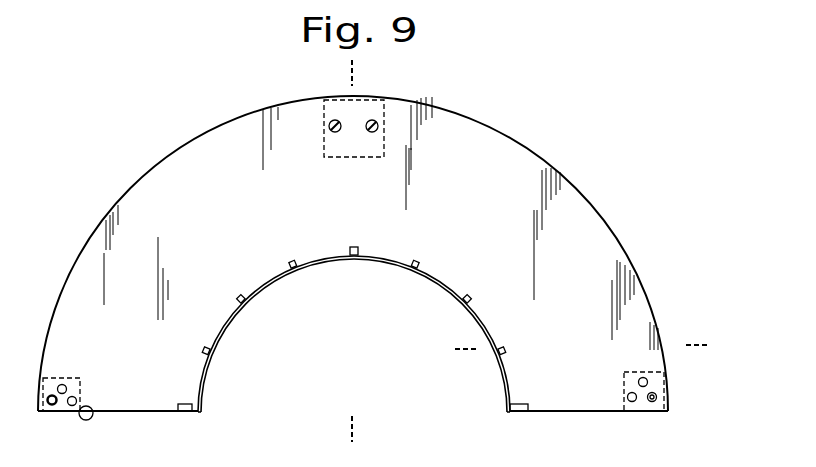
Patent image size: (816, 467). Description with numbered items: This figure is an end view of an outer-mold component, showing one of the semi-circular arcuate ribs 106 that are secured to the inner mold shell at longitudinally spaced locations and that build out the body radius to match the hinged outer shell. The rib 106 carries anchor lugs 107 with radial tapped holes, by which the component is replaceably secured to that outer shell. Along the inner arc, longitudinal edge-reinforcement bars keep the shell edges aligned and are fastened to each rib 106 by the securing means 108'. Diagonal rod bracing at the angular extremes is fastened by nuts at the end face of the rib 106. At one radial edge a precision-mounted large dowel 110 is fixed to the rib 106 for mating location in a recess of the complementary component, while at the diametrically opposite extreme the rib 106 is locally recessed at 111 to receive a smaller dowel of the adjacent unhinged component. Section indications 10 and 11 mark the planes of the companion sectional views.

The semi-circular arcuate rib 106 is at (433, 223).
The anchor lug 107 is at (343, 158).
The securing means for edge-reinforcement bar 108' is at (340, 329).
The large dowel 110 is at (90, 420).
The local recess 111 is at (653, 408).
The section line 10- 10 is at (317, 73).
The section line 11- 11 is at (697, 302).